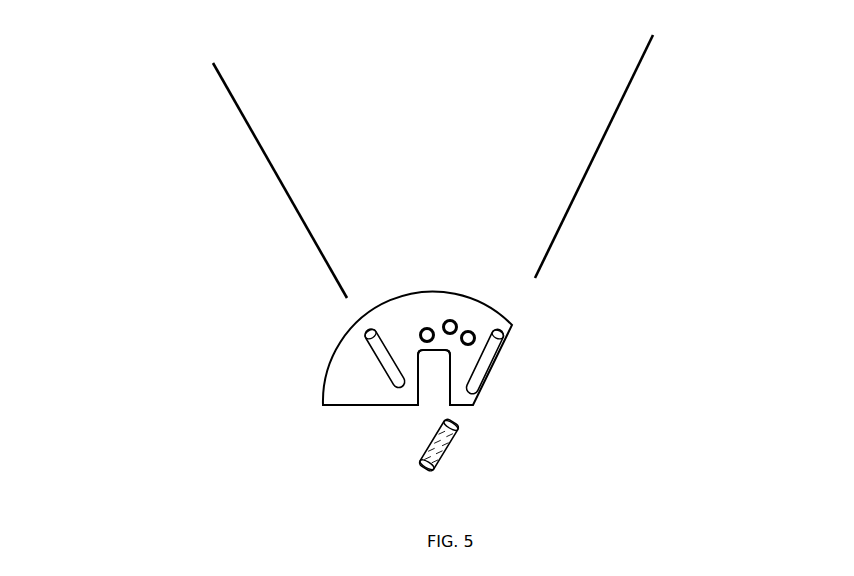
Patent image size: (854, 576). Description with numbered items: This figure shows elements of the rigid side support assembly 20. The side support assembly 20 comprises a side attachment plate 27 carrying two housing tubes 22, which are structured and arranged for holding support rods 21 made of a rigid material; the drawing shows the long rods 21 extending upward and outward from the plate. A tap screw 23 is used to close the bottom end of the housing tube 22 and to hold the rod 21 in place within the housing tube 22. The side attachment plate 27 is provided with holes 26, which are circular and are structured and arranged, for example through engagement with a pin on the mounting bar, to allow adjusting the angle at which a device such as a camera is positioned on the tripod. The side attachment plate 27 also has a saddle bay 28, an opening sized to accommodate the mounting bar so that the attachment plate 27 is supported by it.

The rigid side support assembly 20 is at (215, 357).
The support rod 21 is at (615, 174).
The housing tube 22 is at (507, 344).
The tap screw 23 is at (460, 453).
The holes 26 is at (448, 313).
The side attachment plate 27 is at (343, 382).
The saddle bay 28 is at (435, 382).